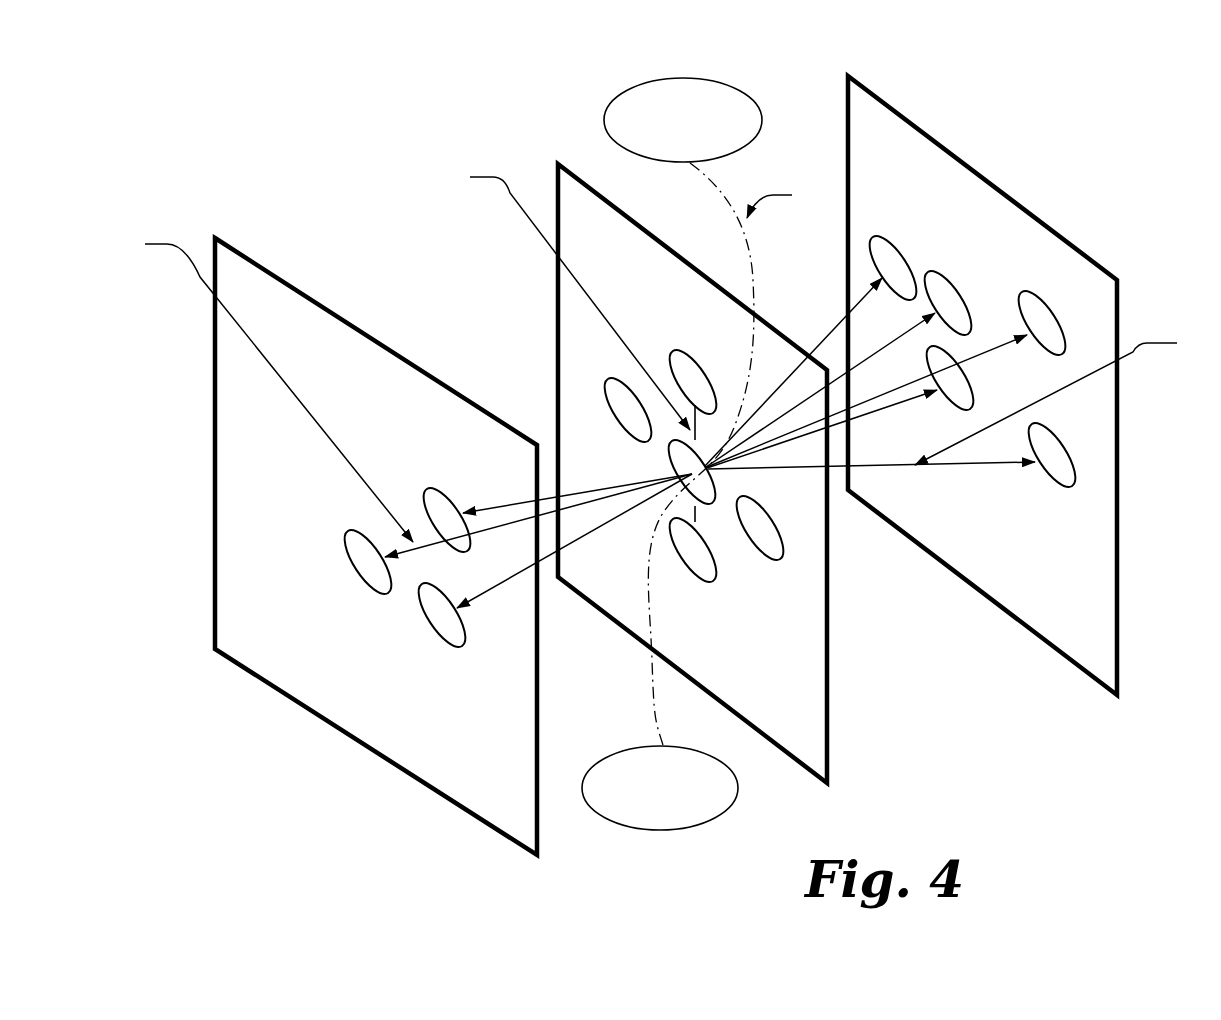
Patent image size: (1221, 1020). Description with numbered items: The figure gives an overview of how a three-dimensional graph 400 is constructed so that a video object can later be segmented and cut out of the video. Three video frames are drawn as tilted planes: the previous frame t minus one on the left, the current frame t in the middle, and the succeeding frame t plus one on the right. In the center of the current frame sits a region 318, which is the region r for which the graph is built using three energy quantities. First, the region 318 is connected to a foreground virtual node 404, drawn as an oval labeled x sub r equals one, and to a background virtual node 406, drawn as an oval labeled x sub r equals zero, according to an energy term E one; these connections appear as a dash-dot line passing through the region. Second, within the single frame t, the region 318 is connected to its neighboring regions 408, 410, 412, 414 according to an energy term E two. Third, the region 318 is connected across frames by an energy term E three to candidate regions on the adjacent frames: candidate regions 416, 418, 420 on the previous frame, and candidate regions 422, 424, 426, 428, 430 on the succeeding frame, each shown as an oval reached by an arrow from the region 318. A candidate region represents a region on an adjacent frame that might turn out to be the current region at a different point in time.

The 3-D graph 400 is at (228, 86).
The region 318 is at (713, 508).
The foreground virtual node 404 is at (660, 801).
The background virtual node 406 is at (683, 107).
The neighboring region 408 is at (628, 419).
The neighboring region 410 is at (693, 374).
The neighboring region 412 is at (767, 537).
The neighboring region 414 is at (693, 559).
The candidate region 416 is at (368, 565).
The candidate region 418 is at (447, 529).
The candidate region 420 is at (442, 624).
The candidate region 422 is at (892, 259).
The candidate region 424 is at (948, 295).
The candidate region 426 is at (1041, 315).
The candidate region 428 is at (950, 388).
The candidate region 430 is at (1052, 464).